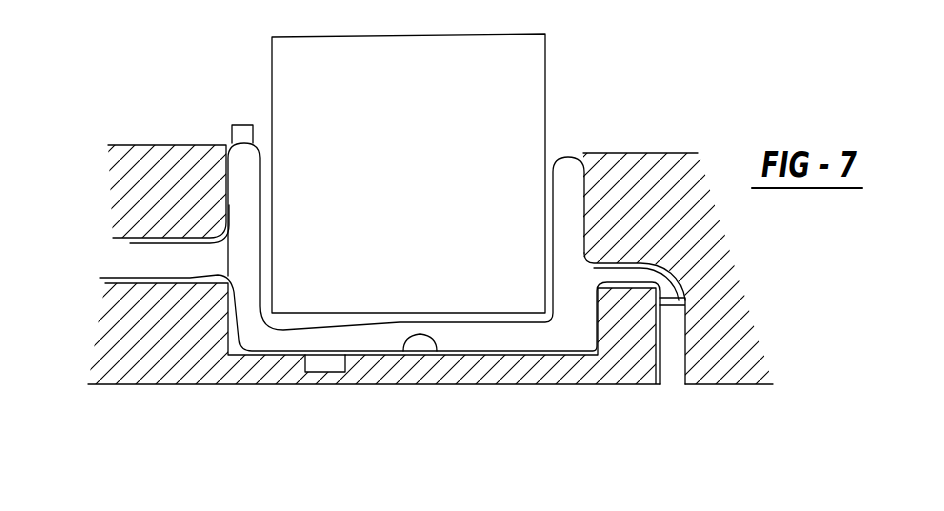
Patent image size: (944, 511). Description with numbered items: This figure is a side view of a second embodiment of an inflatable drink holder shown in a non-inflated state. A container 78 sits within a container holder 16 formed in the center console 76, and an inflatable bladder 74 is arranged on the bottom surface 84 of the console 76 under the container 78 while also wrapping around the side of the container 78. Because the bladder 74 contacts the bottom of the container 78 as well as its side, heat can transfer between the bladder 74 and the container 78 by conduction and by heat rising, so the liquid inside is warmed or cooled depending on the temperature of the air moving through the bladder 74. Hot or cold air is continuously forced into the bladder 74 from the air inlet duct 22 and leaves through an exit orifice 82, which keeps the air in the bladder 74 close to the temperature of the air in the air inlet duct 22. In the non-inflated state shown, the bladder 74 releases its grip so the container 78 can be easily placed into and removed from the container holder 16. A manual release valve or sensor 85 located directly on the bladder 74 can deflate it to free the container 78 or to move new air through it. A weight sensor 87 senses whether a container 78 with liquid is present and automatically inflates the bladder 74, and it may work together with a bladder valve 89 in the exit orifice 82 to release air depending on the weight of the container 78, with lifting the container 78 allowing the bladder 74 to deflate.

The container 78 is at (544, 34).
The container holder 16 is at (583, 166).
The center console 76 is at (183, 167).
The manual release valve or sensor 85 is at (243, 124).
The air inlet duct 22 is at (160, 243).
The bladder 74 is at (230, 266).
The weight sensor 87 is at (332, 374).
The bottom surface 84 is at (403, 351).
The exit orifice 82 is at (678, 360).
The bladder valve 89 is at (687, 317).